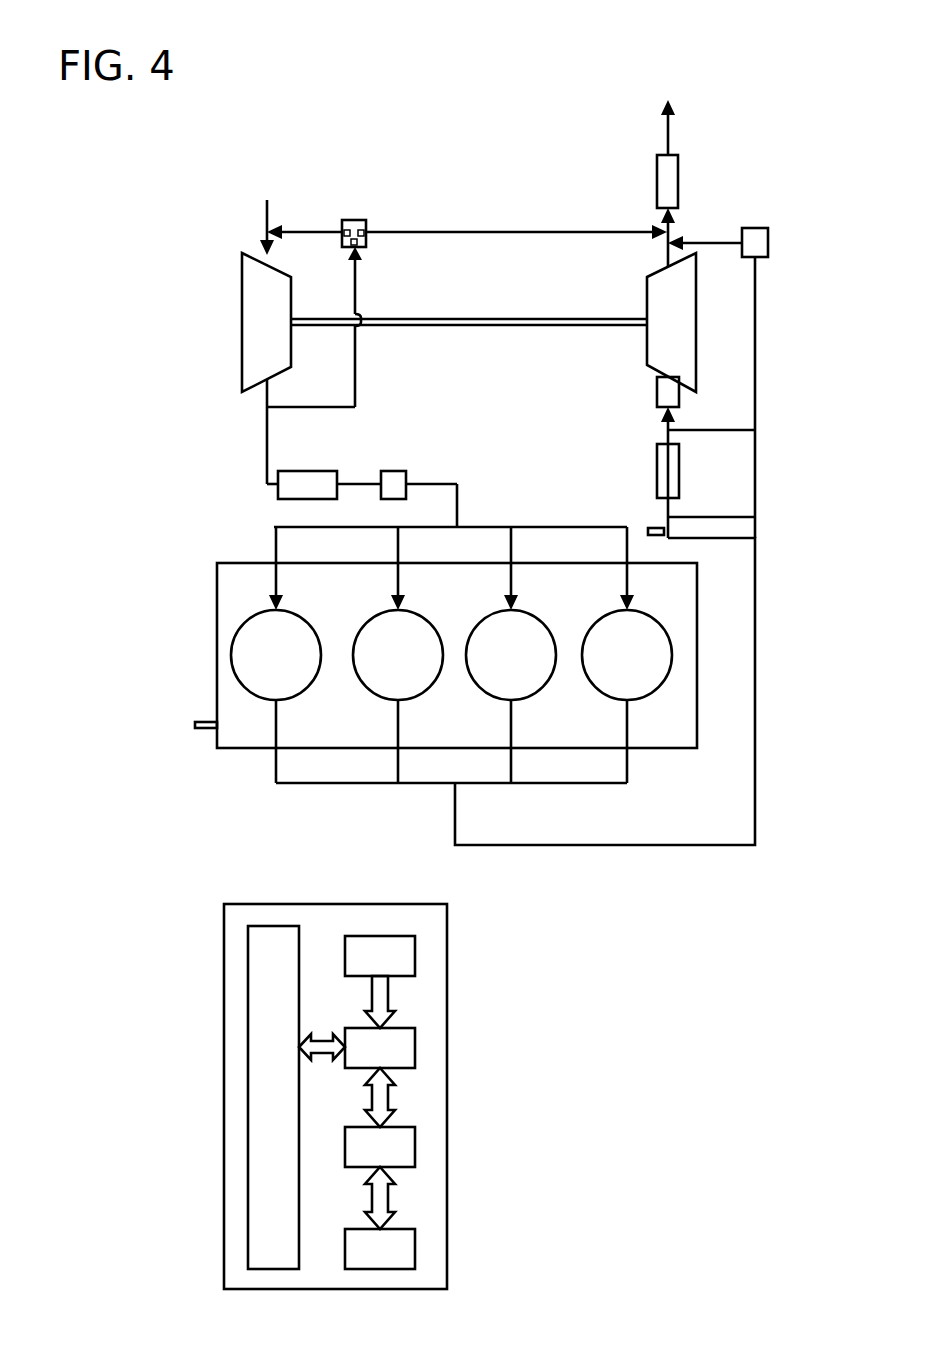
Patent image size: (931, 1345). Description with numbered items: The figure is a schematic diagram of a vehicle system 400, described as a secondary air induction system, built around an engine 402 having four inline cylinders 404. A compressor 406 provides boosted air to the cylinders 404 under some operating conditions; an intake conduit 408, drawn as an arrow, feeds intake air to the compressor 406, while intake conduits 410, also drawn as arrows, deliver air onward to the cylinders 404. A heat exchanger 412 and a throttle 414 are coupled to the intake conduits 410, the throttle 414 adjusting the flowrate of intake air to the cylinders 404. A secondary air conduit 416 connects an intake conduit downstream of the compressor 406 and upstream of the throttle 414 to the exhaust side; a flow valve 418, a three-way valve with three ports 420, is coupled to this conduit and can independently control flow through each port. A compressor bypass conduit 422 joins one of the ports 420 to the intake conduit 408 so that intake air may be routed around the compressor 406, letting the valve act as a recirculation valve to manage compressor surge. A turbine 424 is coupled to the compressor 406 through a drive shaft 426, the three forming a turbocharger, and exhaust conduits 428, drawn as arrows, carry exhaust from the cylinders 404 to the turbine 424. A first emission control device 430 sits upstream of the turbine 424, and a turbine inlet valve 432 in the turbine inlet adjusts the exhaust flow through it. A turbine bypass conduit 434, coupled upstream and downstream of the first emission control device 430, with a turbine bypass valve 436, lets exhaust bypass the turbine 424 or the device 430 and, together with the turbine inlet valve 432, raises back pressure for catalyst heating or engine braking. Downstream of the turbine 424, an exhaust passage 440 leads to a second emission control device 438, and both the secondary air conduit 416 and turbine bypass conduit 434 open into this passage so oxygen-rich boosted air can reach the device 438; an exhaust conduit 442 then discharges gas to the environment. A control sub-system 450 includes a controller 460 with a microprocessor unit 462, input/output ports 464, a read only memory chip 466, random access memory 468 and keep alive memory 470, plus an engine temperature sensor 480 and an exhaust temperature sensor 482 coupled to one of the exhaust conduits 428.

The vehicle system 400 is at (148, 148).
The engine 402 is at (217, 601).
The cylinders 404 is at (265, 614).
The compressor 406 is at (284, 332).
The intake conduit 408 is at (267, 230).
The intake conduits 410 is at (267, 444).
The heat exchanger 412 is at (290, 471).
The throttle 414 is at (395, 471).
The secondary air conduit 416 is at (455, 232).
The flow valve 418 is at (355, 220).
The ports 420 is at (339, 228).
The compressor bypass conduit 422 is at (323, 238).
The turbine 424 is at (690, 332).
The drive shaft 426 is at (425, 319).
The exhaust conduits 428 is at (277, 766).
The first emission control device 430 is at (679, 472).
The turbine inlet valve 432 is at (657, 394).
The turbine bypass conduit 434 is at (755, 381).
The turbine bypass valve 436 is at (768, 244).
The second emission control device 438 is at (679, 181).
The exhaust passage 440 is at (670, 231).
The exhaust conduit 442 is at (669, 136).
The control sub-system 450 is at (160, 983).
The controller 460 is at (447, 904).
The microprocessor unit 462 is at (415, 1042).
The input/output ports 464 is at (299, 935).
The read only memory chip 466 is at (415, 952).
The random access memory 468 is at (415, 1145).
The keep alive memory 470 is at (415, 1245).
The engine temperature sensor 480 is at (207, 722).
The exhaust temperature sensor 482 is at (661, 527).